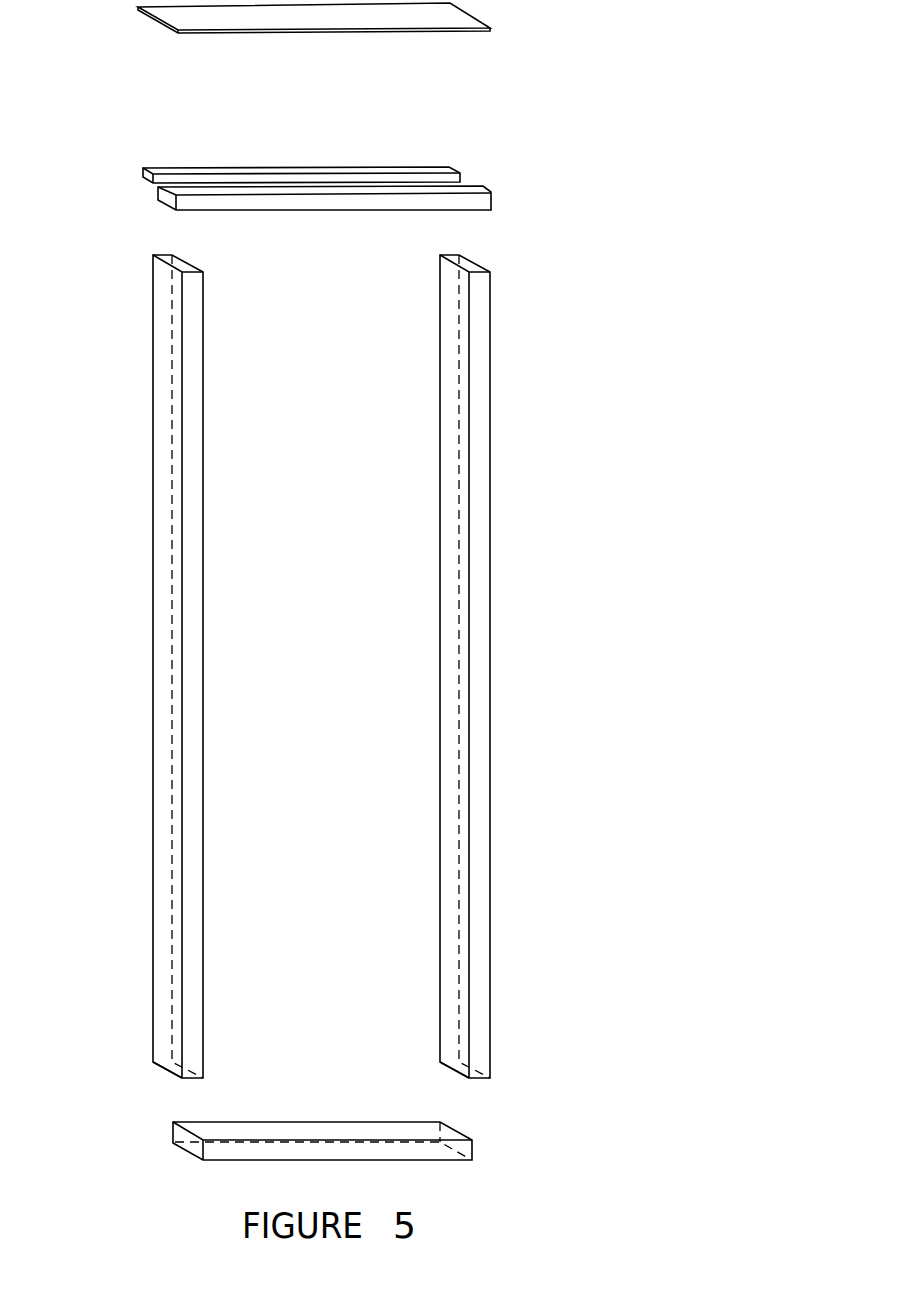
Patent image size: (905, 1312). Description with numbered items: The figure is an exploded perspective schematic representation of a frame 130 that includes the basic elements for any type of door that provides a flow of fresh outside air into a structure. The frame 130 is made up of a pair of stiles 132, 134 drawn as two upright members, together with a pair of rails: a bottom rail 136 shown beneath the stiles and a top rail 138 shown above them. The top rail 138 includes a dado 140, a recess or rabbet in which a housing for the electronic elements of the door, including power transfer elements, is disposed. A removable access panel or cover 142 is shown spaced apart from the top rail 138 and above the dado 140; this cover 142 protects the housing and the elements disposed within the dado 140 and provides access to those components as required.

The frame 130 is at (320, 163).
The stile 132 is at (135, 505).
The stile 134 is at (492, 472).
The bottom rail 136 is at (472, 1148).
The top rail 138 is at (165, 168).
The dado 140 is at (160, 190).
The access panel 142 is at (302, 33).